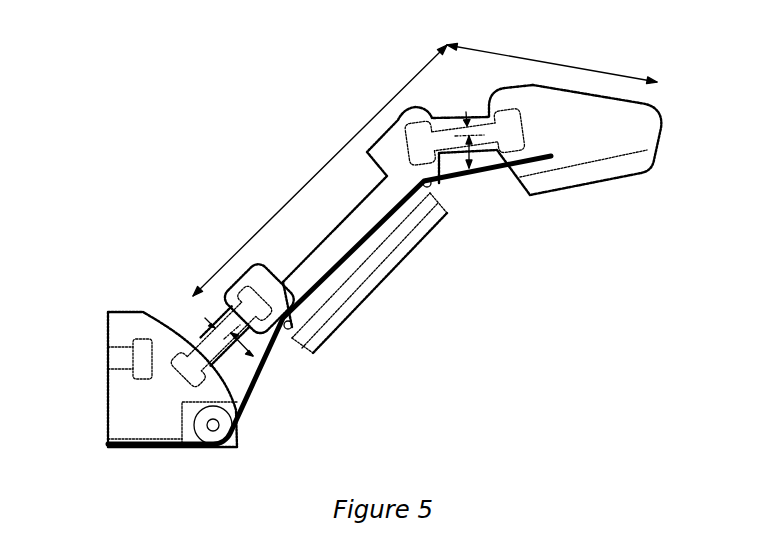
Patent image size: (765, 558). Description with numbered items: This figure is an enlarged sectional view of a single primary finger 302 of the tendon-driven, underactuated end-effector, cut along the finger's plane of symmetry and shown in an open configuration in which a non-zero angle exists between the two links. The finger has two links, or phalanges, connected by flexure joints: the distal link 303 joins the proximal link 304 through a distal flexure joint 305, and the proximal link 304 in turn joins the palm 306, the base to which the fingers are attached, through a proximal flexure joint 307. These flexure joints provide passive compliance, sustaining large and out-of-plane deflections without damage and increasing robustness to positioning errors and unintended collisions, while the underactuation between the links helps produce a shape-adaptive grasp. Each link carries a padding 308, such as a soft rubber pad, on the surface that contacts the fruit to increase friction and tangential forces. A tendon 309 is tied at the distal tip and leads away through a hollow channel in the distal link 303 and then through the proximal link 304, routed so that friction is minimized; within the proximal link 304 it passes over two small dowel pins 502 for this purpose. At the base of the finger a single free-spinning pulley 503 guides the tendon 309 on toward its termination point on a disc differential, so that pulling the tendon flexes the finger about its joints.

The primary finger 302 is at (190, 121).
The distal link 303 is at (652, 125).
The proximal link 304 is at (305, 265).
The distal flexure joint 305 is at (478, 120).
The palm 306 is at (120, 428).
The proximal flexure joint 307 is at (197, 343).
The padding 308 is at (567, 183).
The tendon 309 is at (257, 402).
The dowel pins 502 is at (430, 184).
The pulley 503 is at (195, 432).